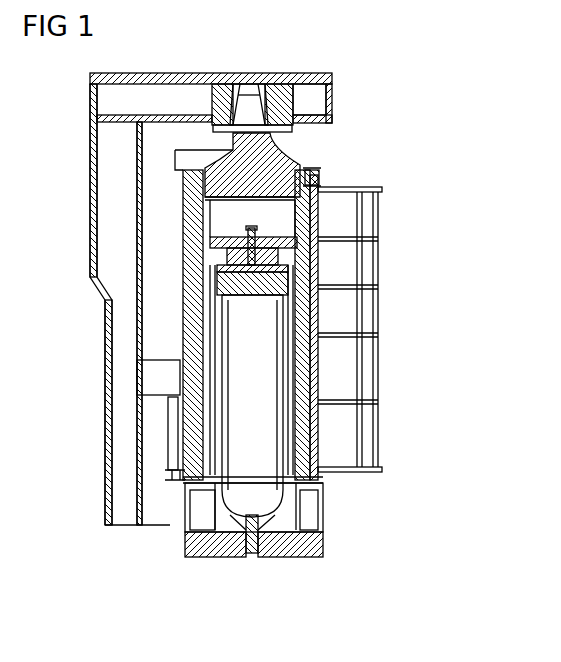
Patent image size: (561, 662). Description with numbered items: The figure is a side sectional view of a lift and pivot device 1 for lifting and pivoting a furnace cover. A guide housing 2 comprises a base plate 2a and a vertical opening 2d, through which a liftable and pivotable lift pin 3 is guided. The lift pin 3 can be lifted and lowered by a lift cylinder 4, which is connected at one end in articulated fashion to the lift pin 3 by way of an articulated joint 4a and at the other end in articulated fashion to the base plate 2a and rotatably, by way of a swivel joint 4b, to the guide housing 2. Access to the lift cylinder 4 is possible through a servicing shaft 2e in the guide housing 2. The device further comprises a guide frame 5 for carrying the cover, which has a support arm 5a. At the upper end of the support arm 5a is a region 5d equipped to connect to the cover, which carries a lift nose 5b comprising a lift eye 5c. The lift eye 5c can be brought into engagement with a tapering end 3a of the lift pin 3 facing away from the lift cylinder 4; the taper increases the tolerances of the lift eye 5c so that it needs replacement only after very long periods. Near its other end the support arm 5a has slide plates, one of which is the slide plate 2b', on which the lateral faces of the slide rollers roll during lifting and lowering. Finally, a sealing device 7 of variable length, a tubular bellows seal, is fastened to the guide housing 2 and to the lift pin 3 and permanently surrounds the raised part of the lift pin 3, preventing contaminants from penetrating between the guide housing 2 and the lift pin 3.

The lift and pivot device 1 is at (410, 185).
The guide housing 2 is at (378, 383).
The base plate 2a is at (295, 542).
The slide plate 2b' is at (121, 420).
The vertical opening 2d is at (315, 300).
The servicing shaft 2e is at (205, 520).
The lift pin 3 is at (305, 348).
The tapering end 3a is at (265, 148).
The lift cylinder 4 is at (270, 410).
The articulated joint 4a is at (255, 229).
The swivel joint 4b is at (252, 553).
The guide frame 5 is at (172, 73).
The support arm 5a is at (105, 378).
The lift nose 5b is at (315, 100).
The lift eye 5c is at (250, 98).
The region 5d is at (90, 235).
The sealing device 7 is at (320, 178).